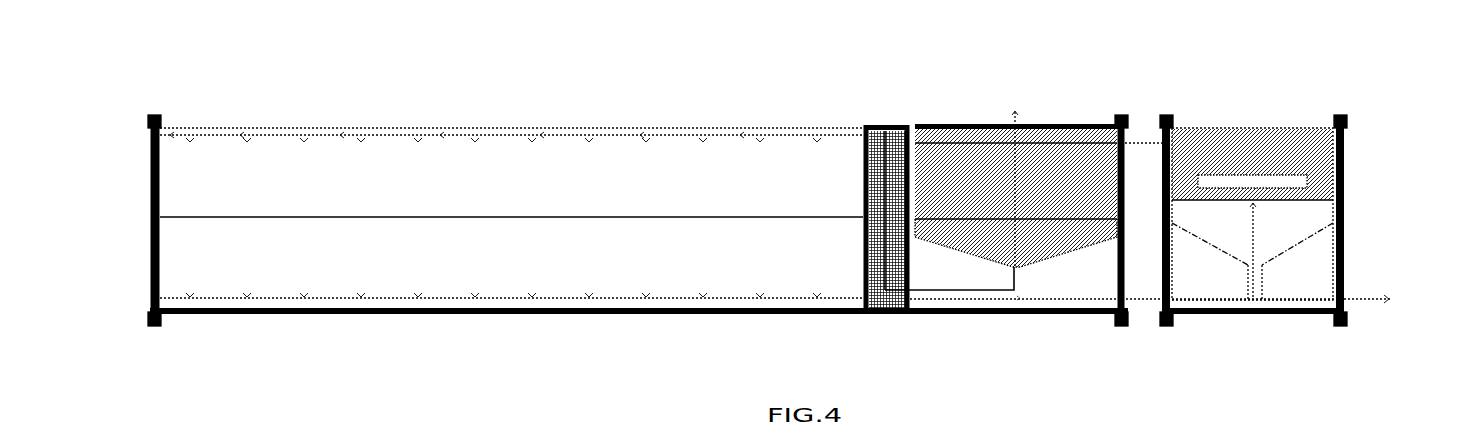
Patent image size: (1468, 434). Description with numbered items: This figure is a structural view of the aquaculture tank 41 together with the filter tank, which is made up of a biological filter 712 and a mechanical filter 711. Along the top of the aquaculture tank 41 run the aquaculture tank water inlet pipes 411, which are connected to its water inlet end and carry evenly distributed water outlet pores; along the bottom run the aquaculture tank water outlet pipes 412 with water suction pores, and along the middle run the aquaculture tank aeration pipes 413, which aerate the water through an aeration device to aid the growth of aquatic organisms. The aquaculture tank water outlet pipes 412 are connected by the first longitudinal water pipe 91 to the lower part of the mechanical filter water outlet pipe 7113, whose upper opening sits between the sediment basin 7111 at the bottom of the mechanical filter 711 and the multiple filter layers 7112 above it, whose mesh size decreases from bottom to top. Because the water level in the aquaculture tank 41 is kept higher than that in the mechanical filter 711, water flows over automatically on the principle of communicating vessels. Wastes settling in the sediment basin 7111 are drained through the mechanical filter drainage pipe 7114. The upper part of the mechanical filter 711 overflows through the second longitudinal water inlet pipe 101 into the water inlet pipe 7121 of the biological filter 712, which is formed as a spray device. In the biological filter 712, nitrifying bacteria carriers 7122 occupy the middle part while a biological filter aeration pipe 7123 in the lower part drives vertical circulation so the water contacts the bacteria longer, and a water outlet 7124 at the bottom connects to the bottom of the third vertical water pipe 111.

The aquaculture tank 41 is at (645, 118).
The aquaculture tank water inlet pipes 411 is at (392, 132).
The aquaculture tank water outlet pipes 412 is at (682, 298).
The aquaculture tank aeration pipes 413 is at (493, 215).
The third vertical water pipe 111 is at (890, 158).
The biological filter 712 is at (1093, 120).
The water inlet pipe 7121 is at (968, 143).
The nitrifying bacteria carriers 7122 is at (1043, 187).
The biological filter aeration pipe 7123 is at (1053, 222).
The water outlet 7124 is at (1021, 295).
The second longitudinal water inlet pipe 101 is at (1147, 133).
The first longitudinal water pipe 91 is at (1147, 300).
The mechanical filter 711 is at (1295, 118).
The sediment basin 7111 is at (1323, 213).
The filter layers 7112 is at (1323, 158).
The mechanical filter water outlet pipe 7113 is at (1253, 248).
The mechanical filter drainage pipe 7114 is at (1363, 297).